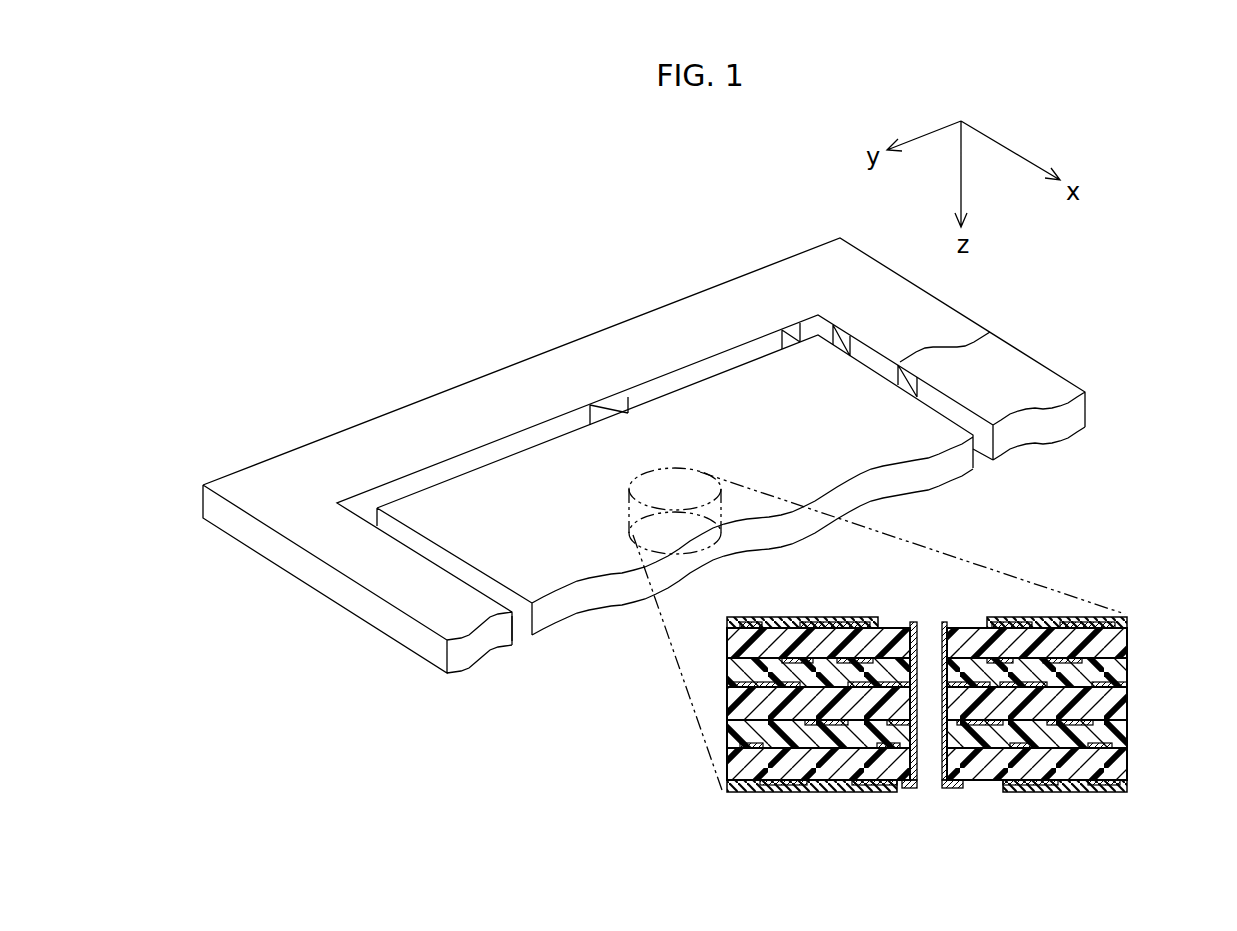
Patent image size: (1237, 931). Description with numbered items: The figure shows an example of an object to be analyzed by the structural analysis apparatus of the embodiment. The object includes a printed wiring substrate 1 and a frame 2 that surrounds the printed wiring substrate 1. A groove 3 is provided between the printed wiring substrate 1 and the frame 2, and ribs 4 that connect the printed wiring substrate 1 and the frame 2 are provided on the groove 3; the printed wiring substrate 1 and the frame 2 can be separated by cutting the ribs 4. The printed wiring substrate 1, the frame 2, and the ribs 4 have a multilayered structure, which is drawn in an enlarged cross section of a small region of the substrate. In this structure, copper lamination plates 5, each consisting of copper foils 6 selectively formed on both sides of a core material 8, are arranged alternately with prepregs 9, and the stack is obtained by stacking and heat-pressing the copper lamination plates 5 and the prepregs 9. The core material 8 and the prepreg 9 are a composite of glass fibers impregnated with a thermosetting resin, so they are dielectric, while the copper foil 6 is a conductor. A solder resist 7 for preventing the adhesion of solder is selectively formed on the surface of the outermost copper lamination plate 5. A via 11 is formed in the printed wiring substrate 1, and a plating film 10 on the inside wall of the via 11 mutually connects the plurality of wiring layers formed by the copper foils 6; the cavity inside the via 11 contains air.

The printed wiring substrate 1 is at (510, 490).
The frame 2 is at (295, 470).
The groove 3 is at (522, 640).
The ribs 4 is at (598, 415).
The copper lamination plate 5 is at (1122, 546).
The copper foil 6 is at (1062, 633).
The solder resist 7 is at (793, 620).
The core material 8 is at (1085, 640).
The prepreg 9 is at (1112, 670).
The plating film 10 is at (903, 788).
The via 11 is at (928, 635).